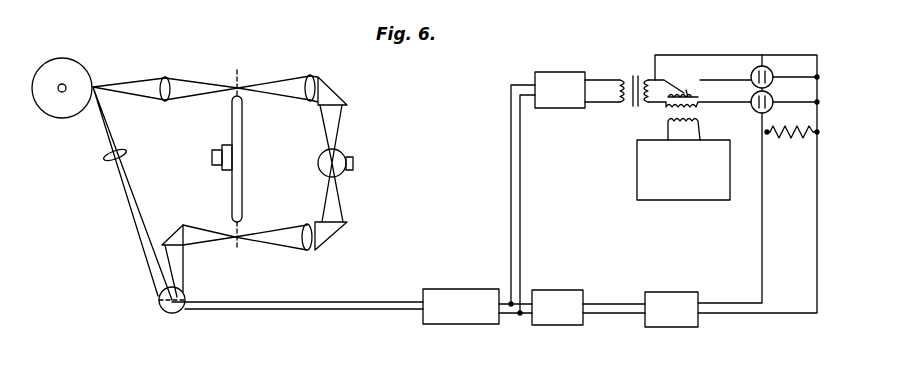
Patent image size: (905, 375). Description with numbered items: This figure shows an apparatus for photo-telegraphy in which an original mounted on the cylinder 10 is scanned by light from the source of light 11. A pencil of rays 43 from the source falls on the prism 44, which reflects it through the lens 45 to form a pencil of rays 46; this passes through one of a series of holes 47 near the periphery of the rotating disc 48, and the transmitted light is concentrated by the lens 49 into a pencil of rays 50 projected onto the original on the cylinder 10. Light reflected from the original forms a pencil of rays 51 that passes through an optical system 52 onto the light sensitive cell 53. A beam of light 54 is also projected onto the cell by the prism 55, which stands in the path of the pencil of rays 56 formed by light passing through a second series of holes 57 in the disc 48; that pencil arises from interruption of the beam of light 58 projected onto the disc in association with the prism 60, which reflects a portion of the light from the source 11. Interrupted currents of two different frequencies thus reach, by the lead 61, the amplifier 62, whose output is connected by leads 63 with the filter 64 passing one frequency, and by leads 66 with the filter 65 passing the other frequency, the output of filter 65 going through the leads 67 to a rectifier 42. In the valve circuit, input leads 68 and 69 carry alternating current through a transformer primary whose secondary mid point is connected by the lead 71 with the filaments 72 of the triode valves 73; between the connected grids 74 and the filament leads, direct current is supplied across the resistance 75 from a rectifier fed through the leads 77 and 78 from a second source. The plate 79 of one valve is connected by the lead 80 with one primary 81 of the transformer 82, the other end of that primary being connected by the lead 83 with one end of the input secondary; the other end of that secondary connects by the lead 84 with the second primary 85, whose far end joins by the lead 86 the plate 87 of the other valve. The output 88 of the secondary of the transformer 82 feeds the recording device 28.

The cylinder 10 is at (60, 70).
The source of light 11 is at (340, 158).
The recording device 28 is at (683, 170).
The rectifier 42 is at (671, 309).
The pencil of rays 43 is at (336, 122).
The prism 44 is at (330, 96).
The lens 45 is at (319, 80).
The pencil of rays 46 is at (286, 86).
The series of holes 47 is at (240, 86).
The rotating disc 48 is at (246, 191).
The lens 49 is at (170, 82).
The pencil of rays 50 is at (130, 84).
The pencil of rays 51 is at (108, 149).
The optical system 52 is at (116, 168).
The light sensitive cell 53 is at (175, 313).
The beam of light 54 is at (180, 267).
The prism 55 is at (168, 238).
The pencil of rays 56 is at (203, 232).
The second series of holes 57 is at (240, 245).
The beam of light 58 is at (288, 234).
The prism 60 is at (346, 232).
The lead 61 is at (354, 301).
The amplifier 62 is at (461, 306).
The leads 63 is at (511, 201).
The filter 64 is at (560, 90).
The filter 65 is at (557, 307).
The leads 66 is at (524, 318).
The leads 67 is at (618, 301).
The input lead 68 is at (608, 105).
The input lead 69 is at (604, 77).
The lead 71 is at (712, 52).
The filaments 72 is at (790, 88).
The triode valves 73 is at (770, 76).
The grids 74 is at (817, 72).
The resistance 75 is at (797, 128).
The lead 77 is at (761, 244).
The lead 78 is at (816, 244).
The plate 79 is at (757, 67).
The lead 80 is at (725, 69).
The primary 81 is at (700, 104).
The transformer 82 is at (648, 108).
The lead 83 is at (662, 78).
The lead 84 is at (662, 101).
The second primary 85 is at (685, 92).
The lead 86 is at (748, 108).
The plate 87 is at (760, 136).
The output of the secondary 88 is at (682, 126).